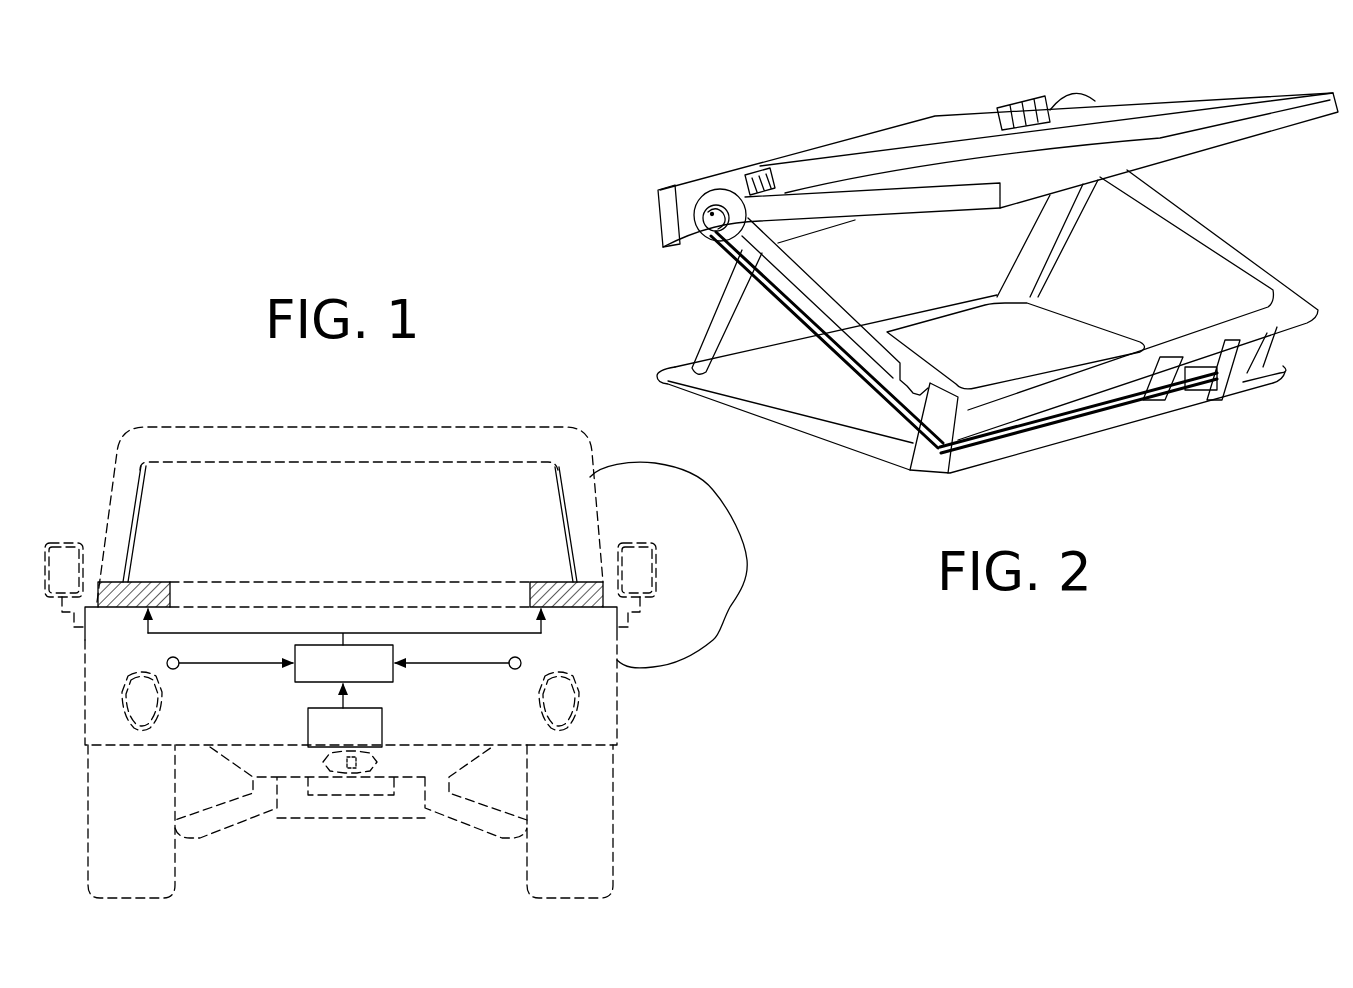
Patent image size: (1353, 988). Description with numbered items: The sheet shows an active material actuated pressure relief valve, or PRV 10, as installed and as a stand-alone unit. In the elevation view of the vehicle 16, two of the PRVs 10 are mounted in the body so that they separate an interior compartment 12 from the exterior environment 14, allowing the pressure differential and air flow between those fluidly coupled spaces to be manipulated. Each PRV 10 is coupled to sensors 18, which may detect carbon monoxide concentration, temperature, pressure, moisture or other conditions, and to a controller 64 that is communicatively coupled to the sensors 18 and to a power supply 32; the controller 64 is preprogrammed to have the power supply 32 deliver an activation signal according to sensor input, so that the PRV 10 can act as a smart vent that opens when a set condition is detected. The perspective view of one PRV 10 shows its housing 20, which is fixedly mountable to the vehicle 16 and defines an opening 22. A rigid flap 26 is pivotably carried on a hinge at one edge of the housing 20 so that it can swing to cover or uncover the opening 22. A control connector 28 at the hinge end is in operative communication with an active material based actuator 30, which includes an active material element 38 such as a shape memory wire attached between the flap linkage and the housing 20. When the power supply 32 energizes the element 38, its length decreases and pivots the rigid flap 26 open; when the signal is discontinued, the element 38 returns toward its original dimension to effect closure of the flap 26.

In FIG. 1, the active material actuated pressure relief valve (PRV) 10 is at (157, 593).
In FIG. 2, the active material actuated pressure relief valve (PRV) 10 is at (610, 145).
In FIG. 1, the interior compartment 12 is at (358, 560).
In FIG. 1, the exterior environment 14 is at (714, 561).
In FIG. 1, the vehicle 16 is at (646, 715).
In FIG. 1, the sensor 18 is at (513, 657).
In FIG. 2, the housing 20 is at (1217, 232).
In FIG. 2, the opening 22 is at (1017, 353).
In FIG. 2, the rigid flap 26 is at (1213, 100).
In FIG. 2, the control connector 28 is at (698, 219).
In FIG. 2, the active material based actuator 30 is at (795, 338).
In FIG. 1, the power supply 32 is at (359, 735).
In FIG. 2, the active material element 38 is at (704, 296).
In FIG. 1, the controller 64 is at (358, 674).